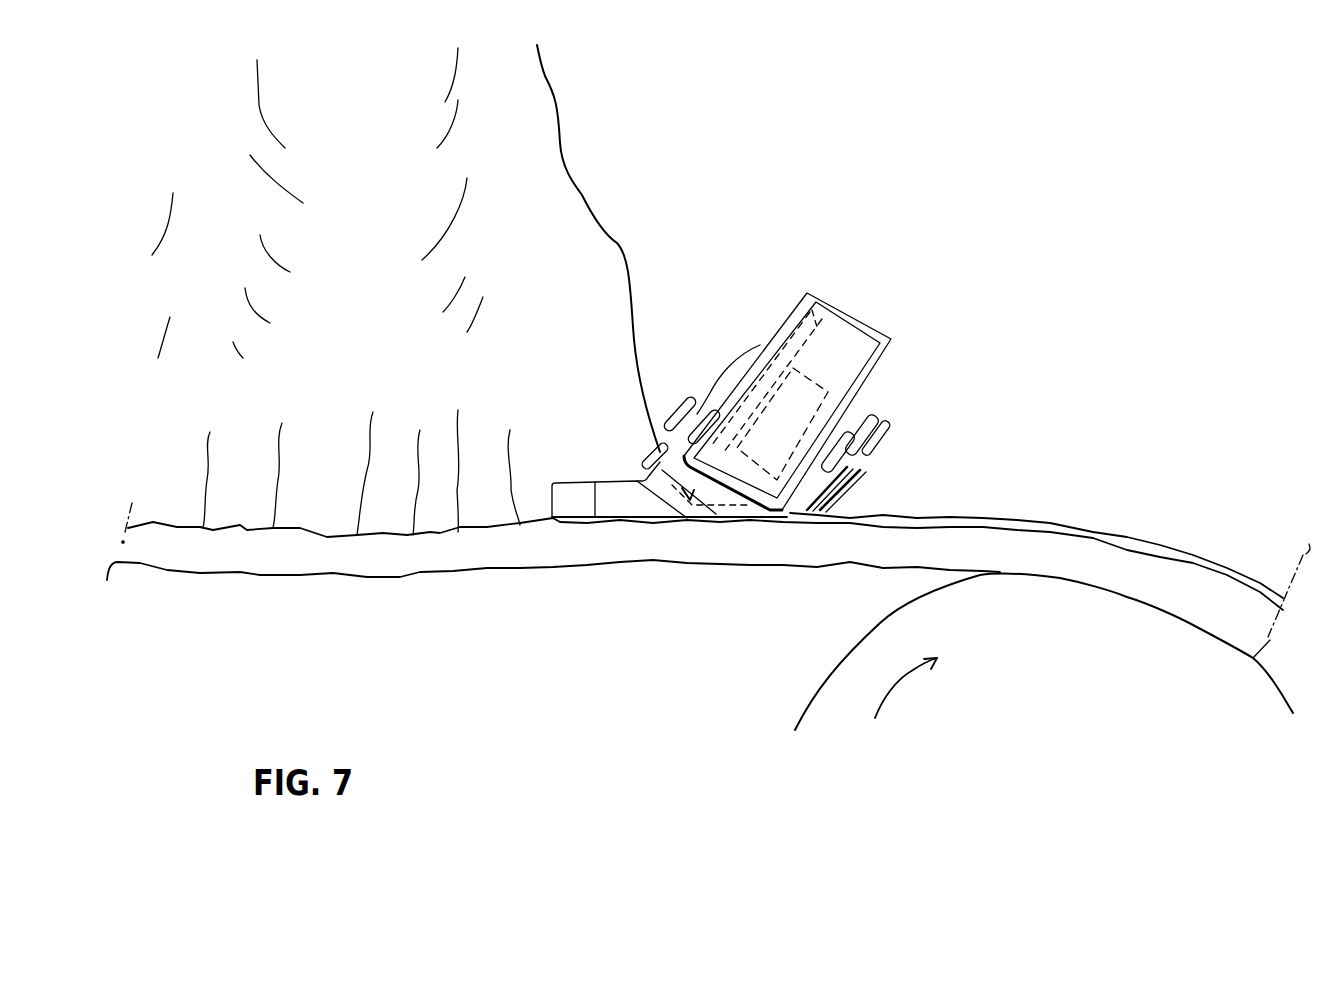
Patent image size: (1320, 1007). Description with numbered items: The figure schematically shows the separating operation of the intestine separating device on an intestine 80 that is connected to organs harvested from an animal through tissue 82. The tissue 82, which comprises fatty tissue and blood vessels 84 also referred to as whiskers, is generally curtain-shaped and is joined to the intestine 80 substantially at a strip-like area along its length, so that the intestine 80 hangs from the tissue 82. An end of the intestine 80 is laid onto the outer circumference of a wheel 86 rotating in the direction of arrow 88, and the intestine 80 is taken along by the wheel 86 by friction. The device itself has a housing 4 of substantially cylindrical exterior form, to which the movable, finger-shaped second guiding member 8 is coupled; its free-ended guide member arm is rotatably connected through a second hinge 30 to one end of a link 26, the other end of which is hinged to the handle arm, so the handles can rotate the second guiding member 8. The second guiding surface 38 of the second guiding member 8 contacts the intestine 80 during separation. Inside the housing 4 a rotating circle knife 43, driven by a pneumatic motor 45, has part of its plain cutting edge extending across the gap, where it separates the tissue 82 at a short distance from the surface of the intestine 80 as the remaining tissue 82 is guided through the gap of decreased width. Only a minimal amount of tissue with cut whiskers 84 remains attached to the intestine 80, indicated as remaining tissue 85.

The housing 4 is at (872, 348).
The second guiding member 8 is at (568, 482).
The link 26 is at (867, 413).
The second hinge 30 is at (877, 430).
The second guiding surface 38 is at (638, 520).
The circle knife 43 is at (818, 328).
The motor 45 is at (810, 378).
The intestine 80 is at (497, 562).
The tissue 82 is at (573, 242).
The blood vessels 84 is at (362, 490).
The remaining tissue 85 is at (952, 522).
The wheel 86 is at (873, 640).
The arrow 88 is at (897, 682).